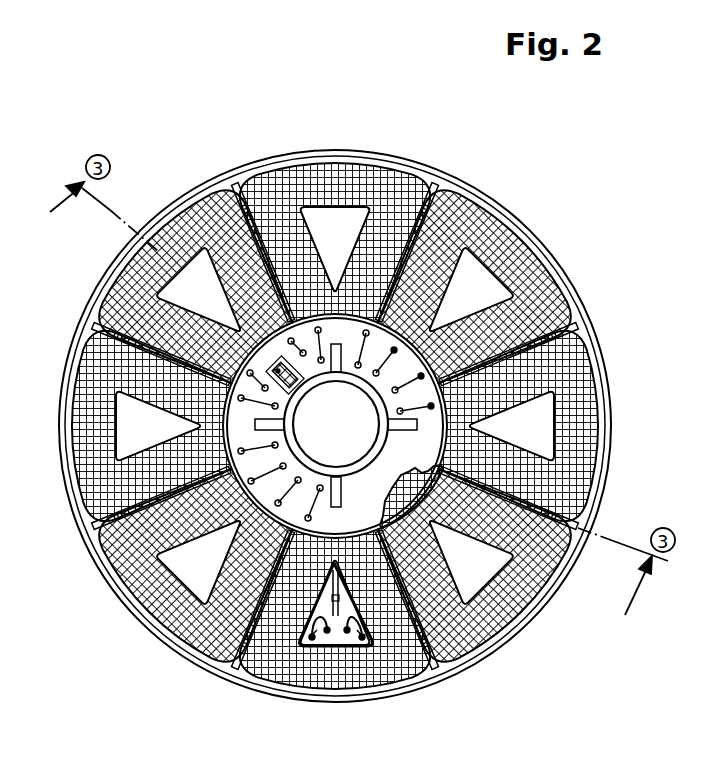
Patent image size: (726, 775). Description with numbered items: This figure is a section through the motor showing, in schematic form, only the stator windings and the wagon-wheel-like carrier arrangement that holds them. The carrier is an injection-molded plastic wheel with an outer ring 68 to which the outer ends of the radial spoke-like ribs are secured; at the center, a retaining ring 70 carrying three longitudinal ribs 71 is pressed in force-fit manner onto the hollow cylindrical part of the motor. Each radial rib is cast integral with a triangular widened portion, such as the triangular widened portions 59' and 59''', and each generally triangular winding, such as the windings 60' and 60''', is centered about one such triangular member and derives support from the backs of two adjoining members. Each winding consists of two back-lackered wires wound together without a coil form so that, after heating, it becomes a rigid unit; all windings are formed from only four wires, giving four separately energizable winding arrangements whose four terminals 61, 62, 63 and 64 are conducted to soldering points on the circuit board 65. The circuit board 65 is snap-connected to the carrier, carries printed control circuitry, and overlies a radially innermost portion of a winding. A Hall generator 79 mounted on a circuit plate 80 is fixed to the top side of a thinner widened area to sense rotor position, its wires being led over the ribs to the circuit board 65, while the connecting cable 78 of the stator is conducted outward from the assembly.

The triangular widened portion 59' is at (193, 313).
The triangular widened portion 59''' is at (335, 251).
The winding 60' is at (206, 284).
The winding 60''' is at (335, 211).
The terminal 61 is at (351, 323).
The terminal 62 is at (386, 342).
The terminal 63 is at (413, 368).
The terminal 64 is at (423, 398).
The circuit board 65 is at (352, 492).
The outer ring 68 is at (603, 422).
The retaining ring 70 is at (355, 368).
The longitudinal rib 71 is at (315, 372).
The connecting cable 78 is at (283, 367).
The Hall generator 79 is at (332, 640).
The circuit plate 80 is at (279, 671).